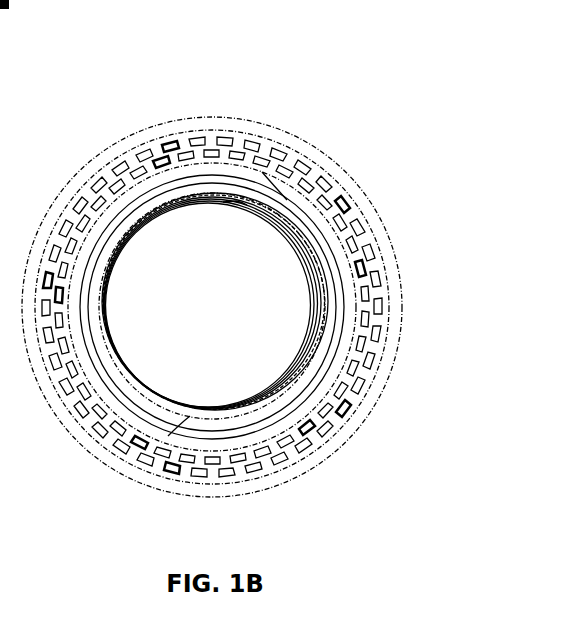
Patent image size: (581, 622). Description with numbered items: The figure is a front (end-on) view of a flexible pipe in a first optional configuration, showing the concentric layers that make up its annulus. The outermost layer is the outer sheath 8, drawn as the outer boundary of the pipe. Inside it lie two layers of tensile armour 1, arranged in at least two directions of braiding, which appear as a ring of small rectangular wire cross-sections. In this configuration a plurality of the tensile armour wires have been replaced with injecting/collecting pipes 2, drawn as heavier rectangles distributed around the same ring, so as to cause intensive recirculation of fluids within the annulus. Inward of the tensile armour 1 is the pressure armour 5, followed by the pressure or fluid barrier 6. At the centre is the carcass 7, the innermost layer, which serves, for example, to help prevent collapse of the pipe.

The tensile armour 1 is at (58, 378).
The injecting/collecting pipes 2 is at (170, 143).
The pressure armour 5 is at (267, 177).
The pressure or fluid barrier 6 is at (228, 427).
The carcass 7 is at (300, 247).
The outer sheath 8 is at (61, 198).